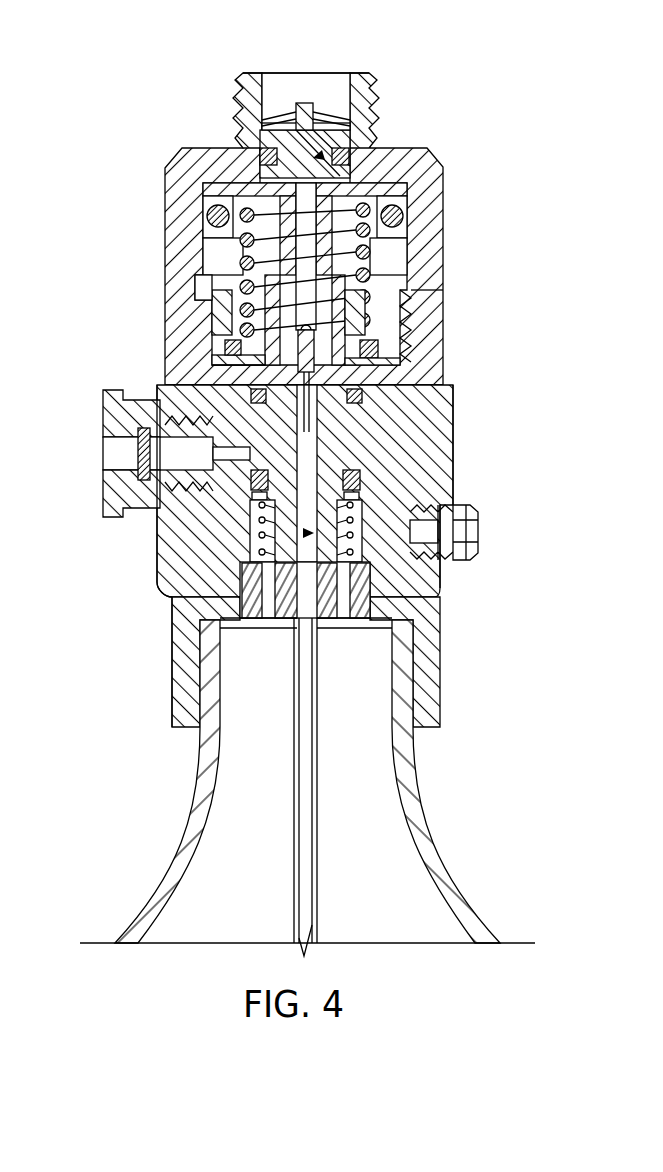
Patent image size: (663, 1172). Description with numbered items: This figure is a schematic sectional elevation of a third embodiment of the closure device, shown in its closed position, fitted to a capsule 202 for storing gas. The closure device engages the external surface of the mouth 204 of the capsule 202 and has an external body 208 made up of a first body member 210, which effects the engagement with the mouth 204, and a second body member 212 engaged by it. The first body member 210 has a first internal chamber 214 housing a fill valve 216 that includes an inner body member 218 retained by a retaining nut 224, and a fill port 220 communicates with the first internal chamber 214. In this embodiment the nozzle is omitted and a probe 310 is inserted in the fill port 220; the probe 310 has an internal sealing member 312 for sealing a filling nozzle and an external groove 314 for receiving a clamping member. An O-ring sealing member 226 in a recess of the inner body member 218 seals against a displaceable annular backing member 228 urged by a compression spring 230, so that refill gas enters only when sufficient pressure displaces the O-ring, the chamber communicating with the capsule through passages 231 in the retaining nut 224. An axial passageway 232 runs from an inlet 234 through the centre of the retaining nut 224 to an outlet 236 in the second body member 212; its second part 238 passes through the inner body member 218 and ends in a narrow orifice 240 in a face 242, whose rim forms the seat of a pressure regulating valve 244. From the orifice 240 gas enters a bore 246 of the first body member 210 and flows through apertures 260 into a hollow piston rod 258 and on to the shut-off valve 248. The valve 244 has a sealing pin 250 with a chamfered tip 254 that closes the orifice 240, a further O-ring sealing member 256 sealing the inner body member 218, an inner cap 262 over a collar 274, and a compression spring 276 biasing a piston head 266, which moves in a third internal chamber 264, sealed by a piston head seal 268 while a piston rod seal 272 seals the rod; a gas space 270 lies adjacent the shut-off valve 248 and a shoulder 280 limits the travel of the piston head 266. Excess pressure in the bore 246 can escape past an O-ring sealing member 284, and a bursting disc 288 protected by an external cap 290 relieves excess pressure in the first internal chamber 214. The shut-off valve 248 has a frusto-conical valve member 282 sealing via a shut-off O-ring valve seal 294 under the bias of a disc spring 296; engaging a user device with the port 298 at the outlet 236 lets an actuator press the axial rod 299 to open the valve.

The capsule 202 is at (440, 830).
The mouth 204 is at (275, 630).
The external body 208 is at (170, 618).
The first body member 210 is at (157, 570).
The second body member 212 is at (238, 147).
The first internal chamber 214 is at (406, 555).
The fill valve 216 is at (443, 480).
The inner body member 218 is at (445, 422).
The fill port 220 is at (236, 470).
The retaining nut 224 is at (325, 626).
The O-ring sealing member 226 is at (363, 476).
The displaceable annular backing member 228 is at (362, 488).
The compression spring 230 is at (178, 586).
The passages 231 is at (176, 660).
The axial passageway 232 is at (268, 556).
The inlet 234 is at (296, 630).
The outlet 236 is at (290, 87).
The second part of the axial passageway 238 is at (245, 400).
The orifice 240 is at (312, 452).
The face 242 is at (190, 385).
The pressure regulating valve 244 is at (222, 300).
The bore 246 is at (222, 348).
The shut-off valve 248 is at (324, 152).
The sealing pin 250 is at (215, 352).
The chamfered tip 254 is at (435, 383).
The further O-ring sealing member 256 is at (365, 396).
The hollow piston rod 258 is at (382, 292).
The apertures 260 is at (402, 334).
The inner cap 262 is at (414, 312).
The third internal chamber 264 is at (240, 232).
The piston head 266 is at (380, 198).
The piston head seal 268 is at (210, 190).
The gas space 270 is at (176, 160).
The piston rod seal 272 is at (228, 256).
The collar 274 is at (262, 272).
The compression spring 276 is at (367, 268).
The shoulder 280 is at (396, 170).
The valve member 282 is at (252, 82).
The O-ring sealing member 284 is at (192, 322).
The bursting disc 288 is at (455, 560).
The external cap 290 is at (480, 550).
The shut-off O-ring valve seal 294 is at (352, 128).
The disc spring 296 is at (348, 110).
The port 298 is at (370, 80).
The axial rod 299 is at (310, 104).
The probe 310 is at (112, 420).
The internal sealing member 312 is at (136, 458).
The external groove 314 is at (122, 515).